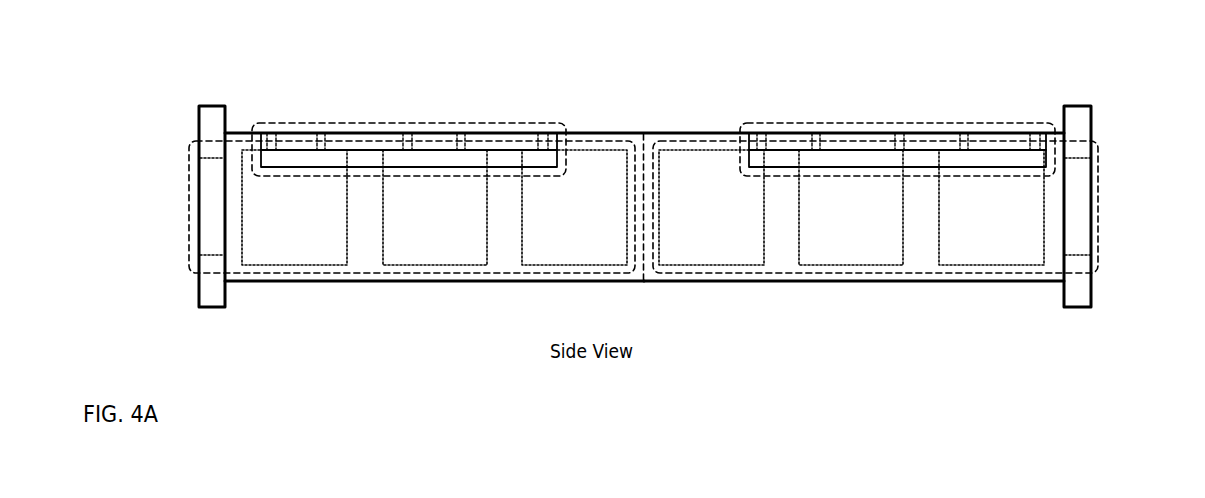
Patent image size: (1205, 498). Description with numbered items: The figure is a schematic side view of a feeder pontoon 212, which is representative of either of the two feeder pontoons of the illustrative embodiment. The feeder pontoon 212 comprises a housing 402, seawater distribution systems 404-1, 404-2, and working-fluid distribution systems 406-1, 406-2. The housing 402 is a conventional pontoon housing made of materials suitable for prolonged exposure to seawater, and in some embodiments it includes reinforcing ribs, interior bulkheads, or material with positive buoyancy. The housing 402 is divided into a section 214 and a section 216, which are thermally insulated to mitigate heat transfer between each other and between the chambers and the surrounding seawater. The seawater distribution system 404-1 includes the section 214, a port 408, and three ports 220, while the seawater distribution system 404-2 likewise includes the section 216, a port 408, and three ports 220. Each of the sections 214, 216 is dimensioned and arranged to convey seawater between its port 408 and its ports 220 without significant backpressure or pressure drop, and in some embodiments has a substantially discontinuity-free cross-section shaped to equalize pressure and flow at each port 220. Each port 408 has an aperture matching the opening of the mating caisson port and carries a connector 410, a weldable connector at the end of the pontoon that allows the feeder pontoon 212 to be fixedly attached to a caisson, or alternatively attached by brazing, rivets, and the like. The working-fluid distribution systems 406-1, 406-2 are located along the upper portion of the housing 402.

The feeder pontoon 212 is at (136, 81).
The section 214 is at (507, 245).
The section 216 is at (785, 245).
The port 220 is at (310, 217).
The housing 402 is at (680, 283).
The seawater distribution system 404-1 is at (360, 281).
The seawater distribution system 404-2 is at (929, 281).
The working-fluid distribution system 406-1 is at (357, 122).
The working-fluid distribution system 406-2 is at (941, 122).
The port 408 is at (207, 211).
The connector 410 is at (198, 123).